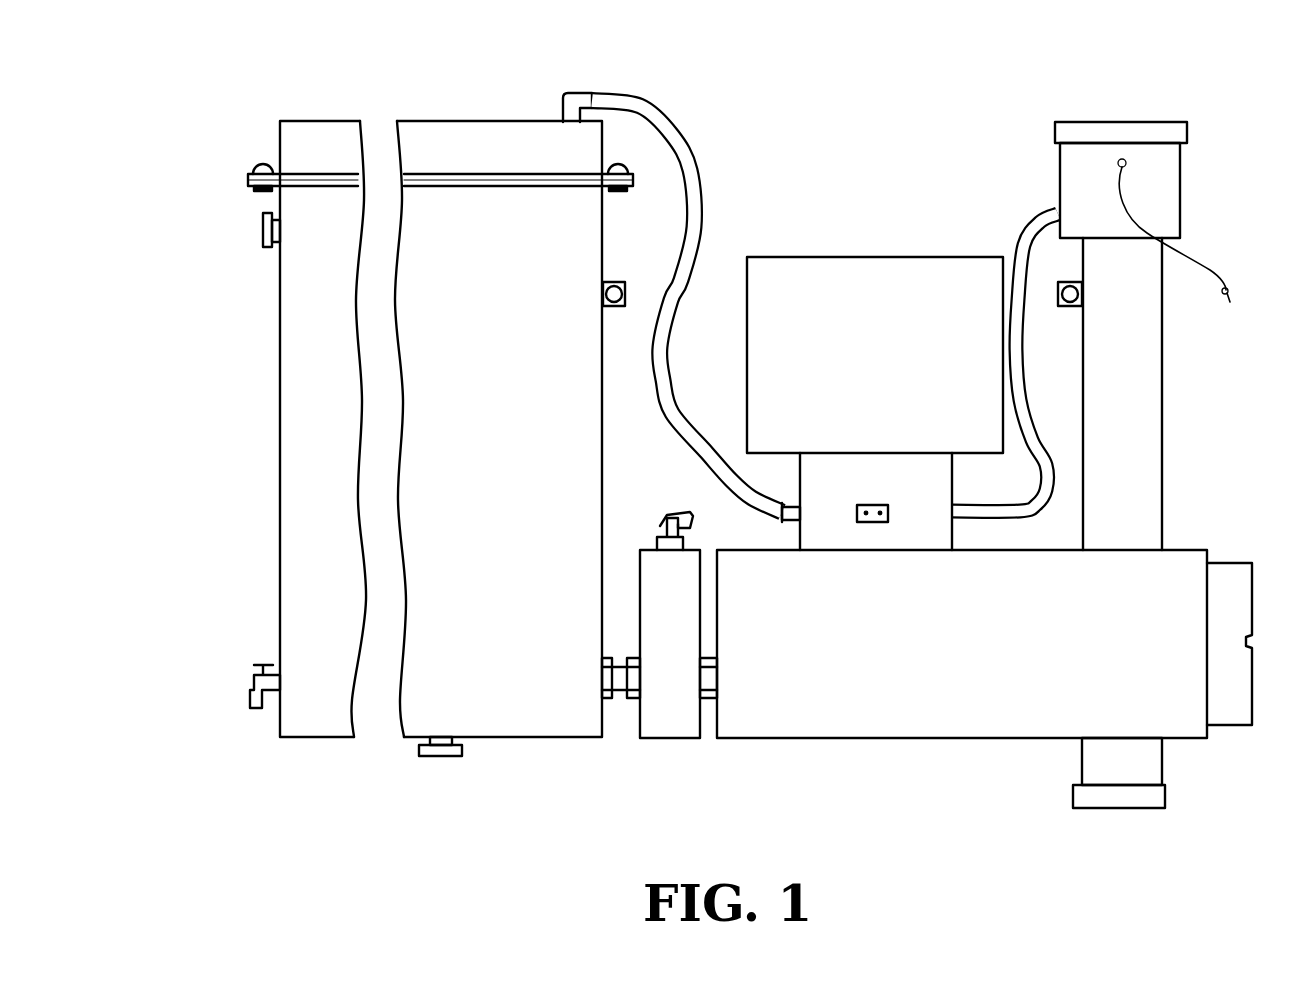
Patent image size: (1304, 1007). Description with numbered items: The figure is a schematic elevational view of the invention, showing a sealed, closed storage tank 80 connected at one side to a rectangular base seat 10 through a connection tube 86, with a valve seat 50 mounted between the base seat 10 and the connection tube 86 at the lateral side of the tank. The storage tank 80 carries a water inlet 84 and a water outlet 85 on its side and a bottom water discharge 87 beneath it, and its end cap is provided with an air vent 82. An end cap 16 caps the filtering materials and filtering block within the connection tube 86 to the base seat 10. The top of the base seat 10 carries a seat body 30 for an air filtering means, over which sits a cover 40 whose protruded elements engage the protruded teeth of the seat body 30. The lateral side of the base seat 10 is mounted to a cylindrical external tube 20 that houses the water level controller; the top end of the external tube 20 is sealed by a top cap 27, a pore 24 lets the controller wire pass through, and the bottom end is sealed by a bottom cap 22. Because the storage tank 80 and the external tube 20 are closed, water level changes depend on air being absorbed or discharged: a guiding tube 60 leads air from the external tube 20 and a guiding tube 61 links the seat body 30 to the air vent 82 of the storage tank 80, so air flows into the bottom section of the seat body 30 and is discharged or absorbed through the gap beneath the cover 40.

The base seat 10 is at (923, 720).
The end cap 16 is at (1237, 680).
The external tube 20 is at (1148, 397).
The bottom cap 22 is at (1123, 798).
The pore 24 is at (1139, 170).
The top cap 27 is at (1135, 120).
The seat body 30 is at (828, 503).
The cover 40 is at (870, 272).
The valve seat 50 is at (675, 728).
The guiding tube 60 is at (1027, 233).
The guiding tube 61 is at (688, 150).
The storage tank 80 is at (295, 367).
The air vent 82 is at (567, 92).
The water inlet 84 is at (262, 226).
The water outlet 85 is at (250, 681).
The connection tube 86 is at (617, 690).
The bottom water discharge 87 is at (443, 758).